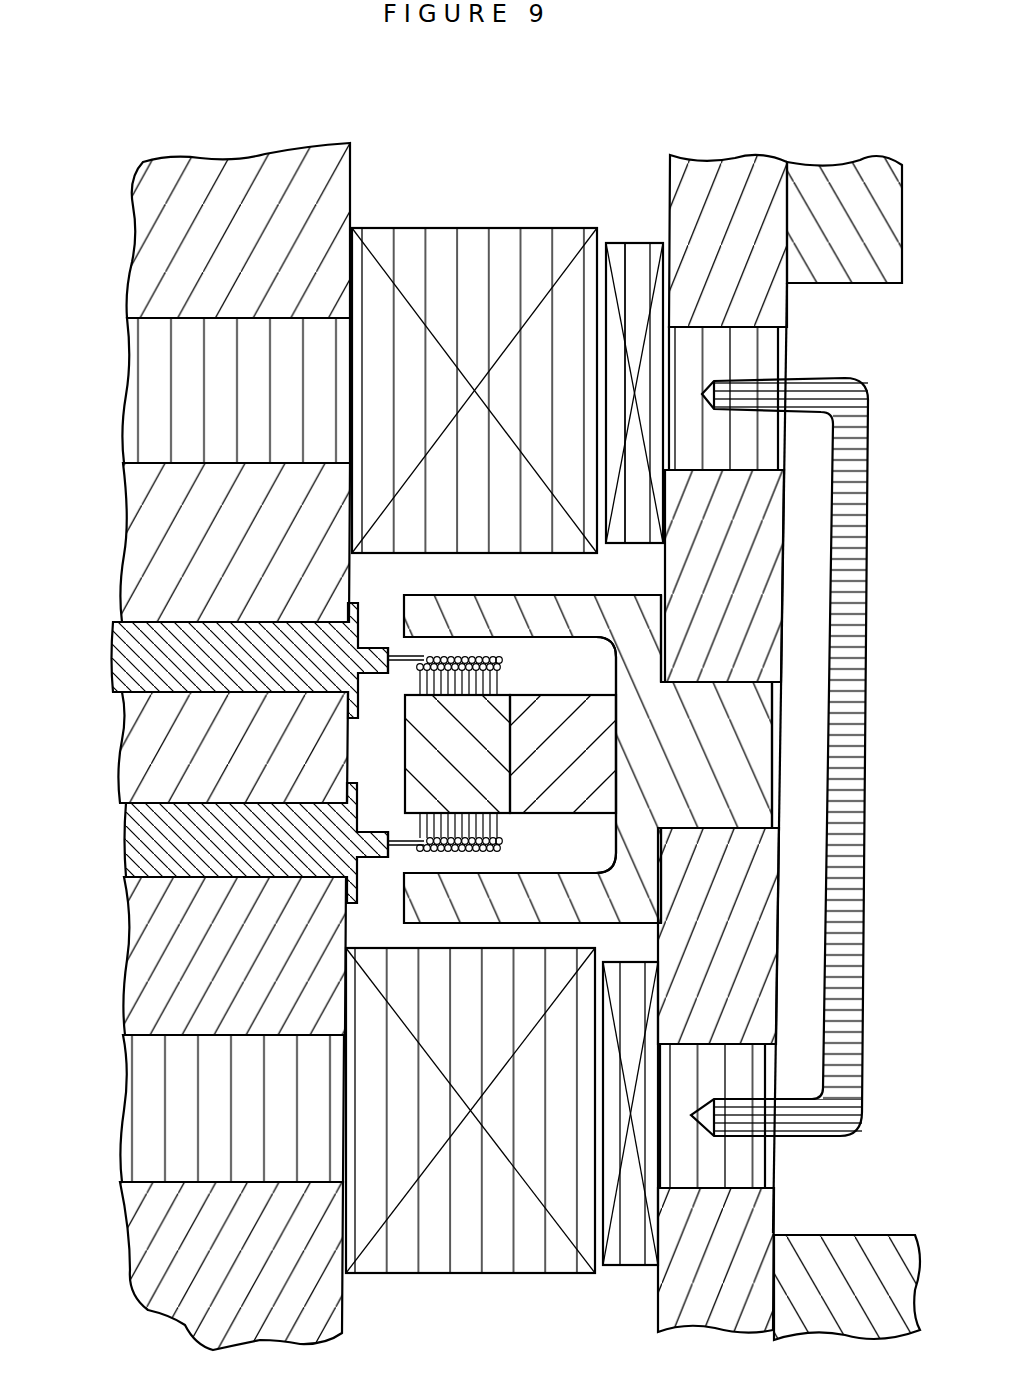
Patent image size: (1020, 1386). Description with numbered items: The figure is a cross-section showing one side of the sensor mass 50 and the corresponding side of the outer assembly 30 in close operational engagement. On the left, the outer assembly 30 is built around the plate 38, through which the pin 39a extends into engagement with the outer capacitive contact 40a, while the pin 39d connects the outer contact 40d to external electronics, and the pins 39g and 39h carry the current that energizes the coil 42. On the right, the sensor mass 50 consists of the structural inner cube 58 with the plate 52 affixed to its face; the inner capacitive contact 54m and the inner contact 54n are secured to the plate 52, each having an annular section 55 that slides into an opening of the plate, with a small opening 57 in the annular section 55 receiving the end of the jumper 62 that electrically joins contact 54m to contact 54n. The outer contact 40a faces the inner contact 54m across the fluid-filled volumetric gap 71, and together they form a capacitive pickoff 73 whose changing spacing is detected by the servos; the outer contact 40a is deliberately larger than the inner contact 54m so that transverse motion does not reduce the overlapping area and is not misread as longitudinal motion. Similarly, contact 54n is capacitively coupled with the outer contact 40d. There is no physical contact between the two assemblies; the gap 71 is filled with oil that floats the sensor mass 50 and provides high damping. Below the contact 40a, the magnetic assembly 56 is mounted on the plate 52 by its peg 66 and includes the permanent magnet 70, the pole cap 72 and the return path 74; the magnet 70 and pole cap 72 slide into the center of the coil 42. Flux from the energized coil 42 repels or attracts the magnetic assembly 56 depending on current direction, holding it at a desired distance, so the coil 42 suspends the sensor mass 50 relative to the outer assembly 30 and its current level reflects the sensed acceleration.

The outer assembly 30 is at (372, 143).
The sensor mass 50 is at (650, 140).
The volumetric gap 71 is at (559, 729).
The plate 38 is at (234, 746).
The pin 39a is at (160, 370).
The pin 39g is at (150, 655).
The pin 39h is at (150, 830).
The pin 39d is at (180, 1122).
The coil 42 is at (398, 670).
The outer capacitive contact 40a is at (440, 252).
The outer contact 40d is at (430, 1245).
The inner capacitive contact 54m is at (638, 245).
The inner contact 54n is at (630, 1235).
The capacitive pickoff 73 is at (607, 255).
The magnetic assembly 56 is at (457, 607).
The return path 74 is at (628, 759).
The peg 66 is at (716, 755).
The pole cap 72 is at (457, 754).
The permanent magnet 70 is at (563, 754).
The plate 52 is at (722, 744).
The inner cube 58 is at (847, 748).
The annular section 55 is at (748, 345).
The small opening 57 is at (712, 392).
The jumper 62 is at (845, 398).